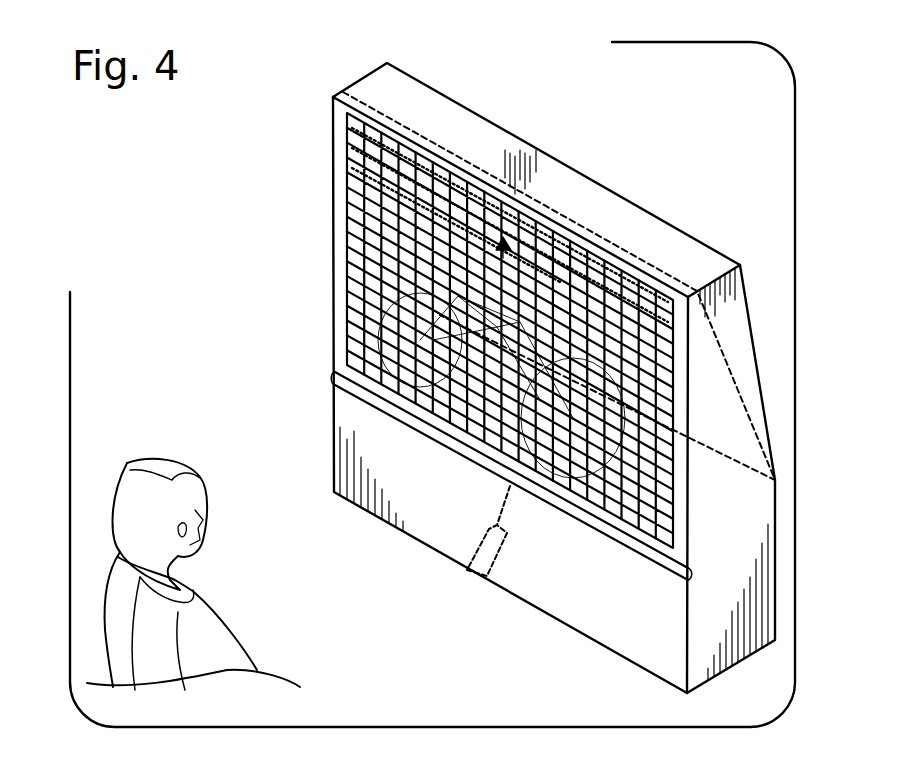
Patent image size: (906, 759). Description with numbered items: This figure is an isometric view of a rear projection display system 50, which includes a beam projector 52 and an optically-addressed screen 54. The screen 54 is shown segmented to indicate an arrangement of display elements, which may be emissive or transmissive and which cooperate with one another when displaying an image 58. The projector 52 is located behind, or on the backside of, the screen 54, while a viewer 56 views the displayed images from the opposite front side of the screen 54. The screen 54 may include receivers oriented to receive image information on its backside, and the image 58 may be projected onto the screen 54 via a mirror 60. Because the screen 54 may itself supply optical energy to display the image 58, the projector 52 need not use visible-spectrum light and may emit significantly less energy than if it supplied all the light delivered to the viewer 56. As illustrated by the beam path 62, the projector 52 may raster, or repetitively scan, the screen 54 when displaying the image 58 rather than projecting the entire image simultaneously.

The rear projection display system 50 is at (260, 186).
The beam projector 52 is at (476, 548).
The optically-addressed screen 54 is at (347, 313).
The viewer 56 is at (153, 462).
The image 58 is at (585, 330).
The mirror 60 is at (738, 437).
The beam path 62 is at (442, 177).